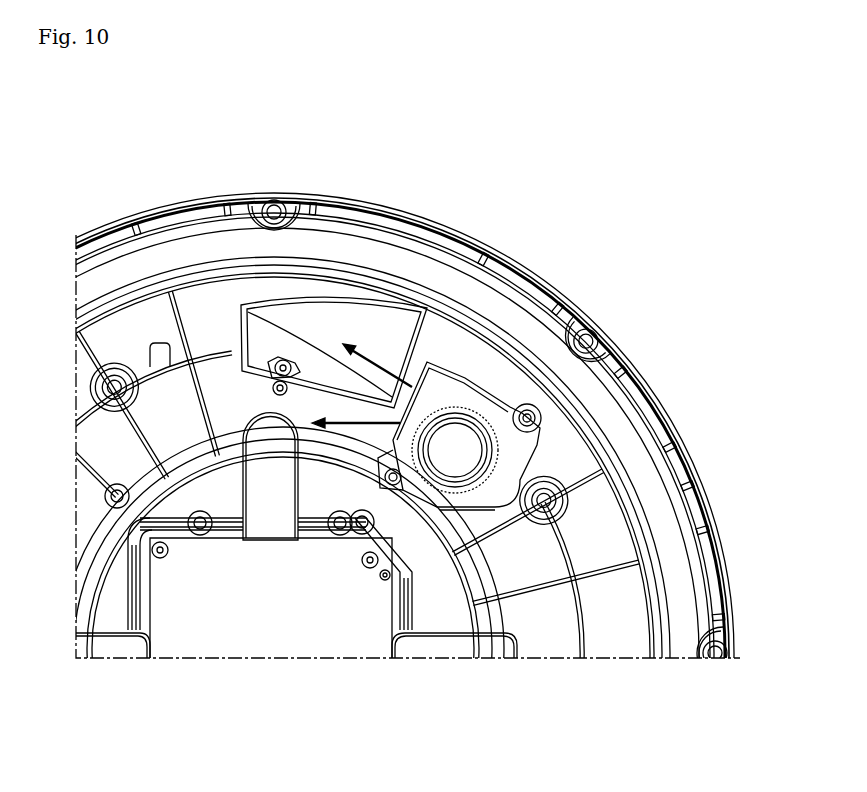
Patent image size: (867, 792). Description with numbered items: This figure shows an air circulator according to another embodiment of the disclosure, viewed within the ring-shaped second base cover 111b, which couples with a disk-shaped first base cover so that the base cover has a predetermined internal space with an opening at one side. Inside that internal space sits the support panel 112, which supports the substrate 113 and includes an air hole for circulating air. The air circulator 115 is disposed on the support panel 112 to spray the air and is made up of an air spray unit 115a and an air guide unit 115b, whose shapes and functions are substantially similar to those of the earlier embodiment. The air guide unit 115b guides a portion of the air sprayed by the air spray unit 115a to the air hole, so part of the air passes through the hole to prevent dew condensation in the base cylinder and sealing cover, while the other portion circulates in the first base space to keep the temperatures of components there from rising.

The second base cover 111b is at (645, 382).
The support panel 112 is at (663, 563).
The substrate 113 is at (272, 655).
The air circulator 115 is at (407, 309).
The air spray unit 115a is at (483, 387).
The air guide unit 115b is at (353, 313).